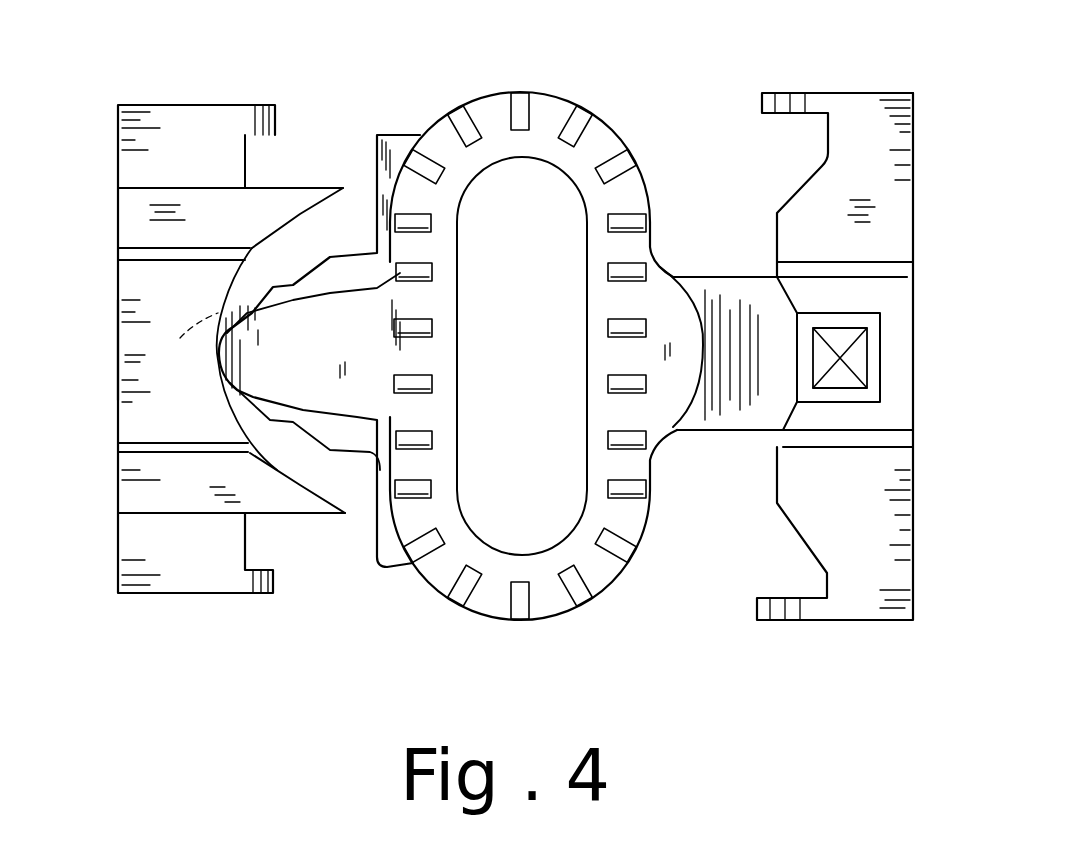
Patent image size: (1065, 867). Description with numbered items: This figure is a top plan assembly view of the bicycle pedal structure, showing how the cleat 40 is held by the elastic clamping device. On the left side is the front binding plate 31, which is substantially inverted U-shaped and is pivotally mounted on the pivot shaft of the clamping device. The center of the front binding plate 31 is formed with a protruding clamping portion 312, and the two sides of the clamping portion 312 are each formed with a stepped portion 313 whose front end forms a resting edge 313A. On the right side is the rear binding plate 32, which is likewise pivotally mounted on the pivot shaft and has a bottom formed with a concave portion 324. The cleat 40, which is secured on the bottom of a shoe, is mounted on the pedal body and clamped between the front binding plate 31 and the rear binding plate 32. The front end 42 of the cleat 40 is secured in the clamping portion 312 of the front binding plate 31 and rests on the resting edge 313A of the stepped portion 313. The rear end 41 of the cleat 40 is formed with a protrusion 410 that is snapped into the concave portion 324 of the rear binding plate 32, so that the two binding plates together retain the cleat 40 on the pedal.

The front binding plate 31 is at (118, 222).
The clamping portion 312 is at (118, 333).
The stepped portion 313 is at (118, 478).
The resting edge 313A is at (300, 213).
The rear binding plate 32 is at (913, 372).
The concave portion 324 is at (858, 315).
The cleat 40 is at (585, 93).
The rear end 41 is at (752, 418).
The protrusion 410 is at (860, 402).
The front end 42 is at (218, 357).